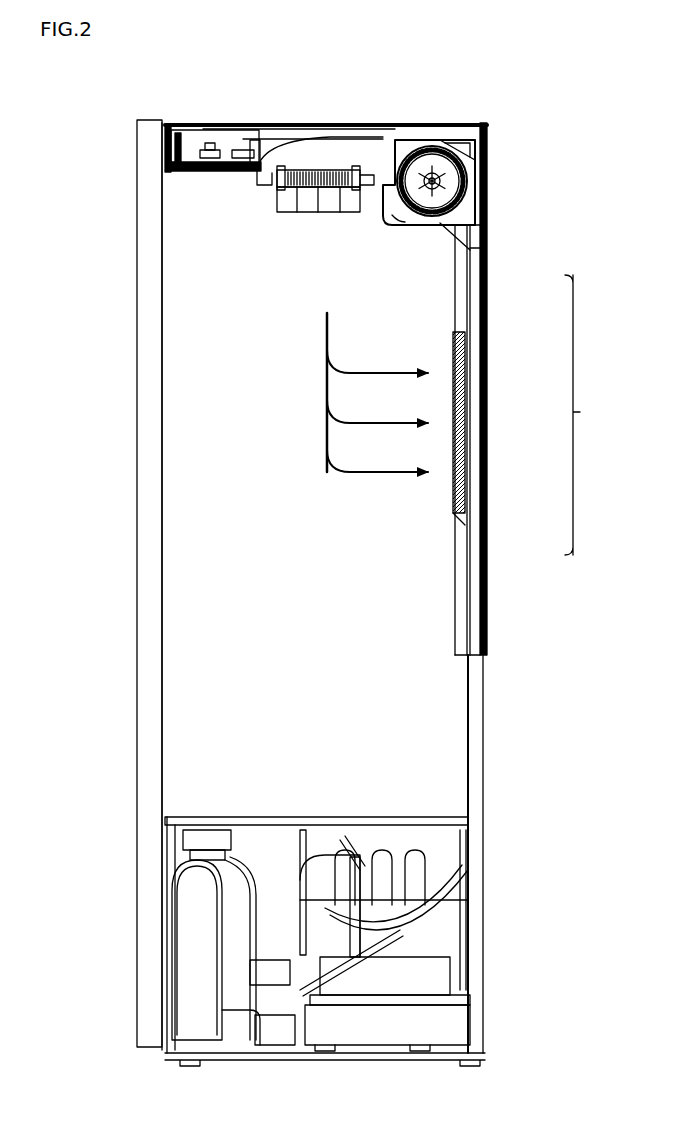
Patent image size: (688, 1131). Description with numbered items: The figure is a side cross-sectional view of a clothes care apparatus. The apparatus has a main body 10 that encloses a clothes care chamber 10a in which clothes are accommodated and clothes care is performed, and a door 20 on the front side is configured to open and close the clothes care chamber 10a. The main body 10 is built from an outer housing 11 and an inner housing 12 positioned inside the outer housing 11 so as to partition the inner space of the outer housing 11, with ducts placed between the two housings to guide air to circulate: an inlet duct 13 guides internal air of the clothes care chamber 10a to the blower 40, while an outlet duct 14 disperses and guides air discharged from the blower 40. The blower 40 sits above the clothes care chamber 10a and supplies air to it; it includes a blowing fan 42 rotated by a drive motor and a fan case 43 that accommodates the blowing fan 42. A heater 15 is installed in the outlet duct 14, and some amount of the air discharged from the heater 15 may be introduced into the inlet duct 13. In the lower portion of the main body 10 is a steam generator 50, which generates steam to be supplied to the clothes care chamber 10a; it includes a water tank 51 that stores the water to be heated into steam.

The main body 10 is at (384, 586).
The clothes care chamber 10a is at (351, 733).
The outer housing 11 is at (486, 289).
The inner housing 12 is at (460, 330).
The inlet duct 13 is at (478, 560).
The outlet duct 14 is at (303, 140).
The heater 15 is at (327, 236).
The door 20 is at (136, 566).
The blower 40 is at (487, 142).
The blowing fan 42 is at (470, 182).
The fan case 43 is at (460, 140).
The steam generator 50 is at (470, 918).
The water tank 51 is at (188, 943).